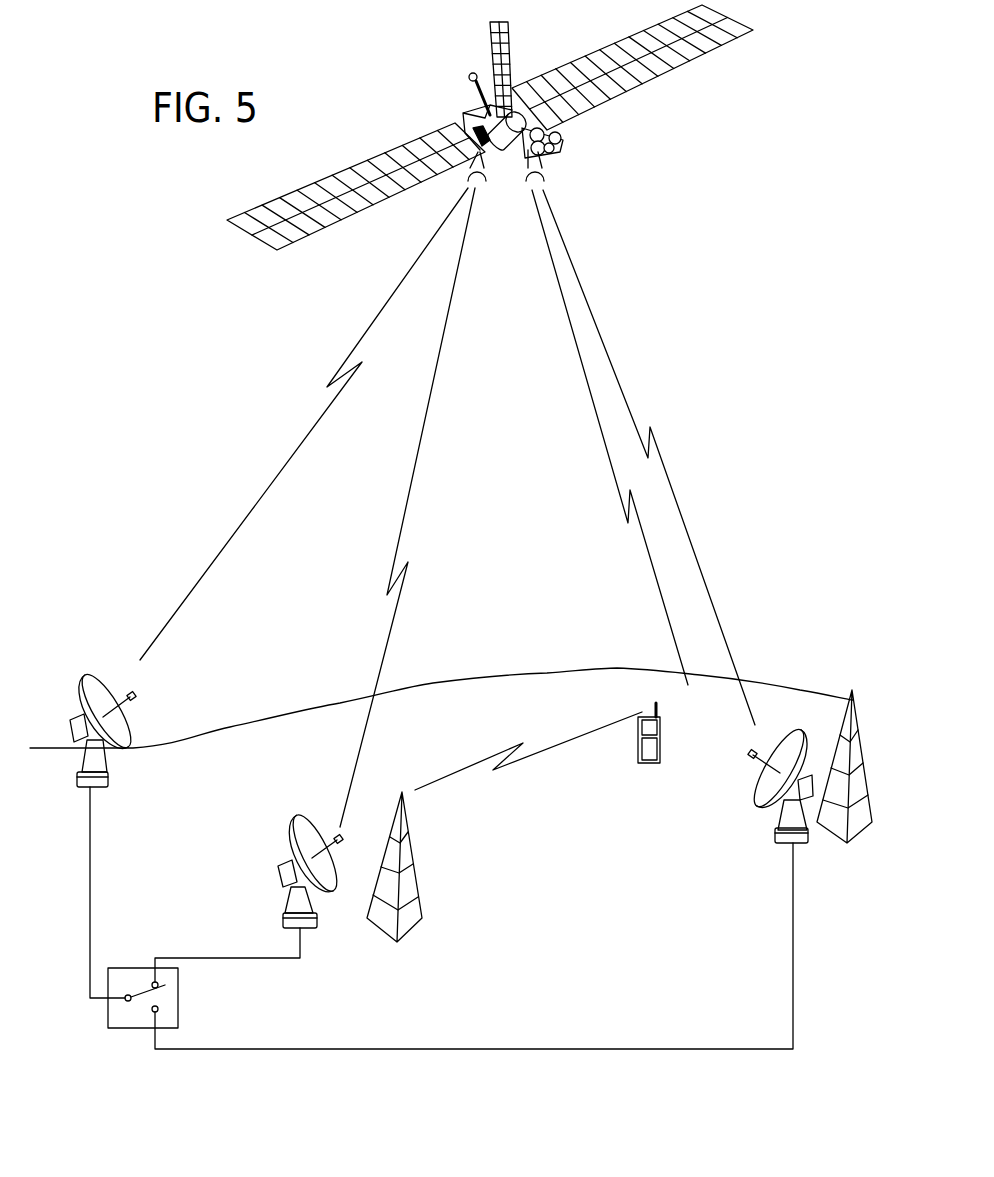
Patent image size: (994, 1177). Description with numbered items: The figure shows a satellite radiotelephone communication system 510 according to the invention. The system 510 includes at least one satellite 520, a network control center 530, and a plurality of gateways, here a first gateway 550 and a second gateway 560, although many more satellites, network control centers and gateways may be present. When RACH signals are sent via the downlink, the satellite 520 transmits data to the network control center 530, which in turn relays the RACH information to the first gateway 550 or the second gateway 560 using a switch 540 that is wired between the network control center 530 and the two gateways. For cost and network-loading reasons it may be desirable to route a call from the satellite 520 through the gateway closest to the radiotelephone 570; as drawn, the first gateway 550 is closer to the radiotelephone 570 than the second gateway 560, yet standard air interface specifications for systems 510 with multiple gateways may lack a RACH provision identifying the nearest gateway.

The satellite radiotelephone communication system 510 is at (693, 310).
The satellite 520 is at (472, 112).
The network control center 530 is at (90, 675).
The switch 540 is at (107, 1020).
The first gateway 550 is at (290, 823).
The second gateway 560 is at (757, 788).
The radiotelephone 570 is at (635, 762).